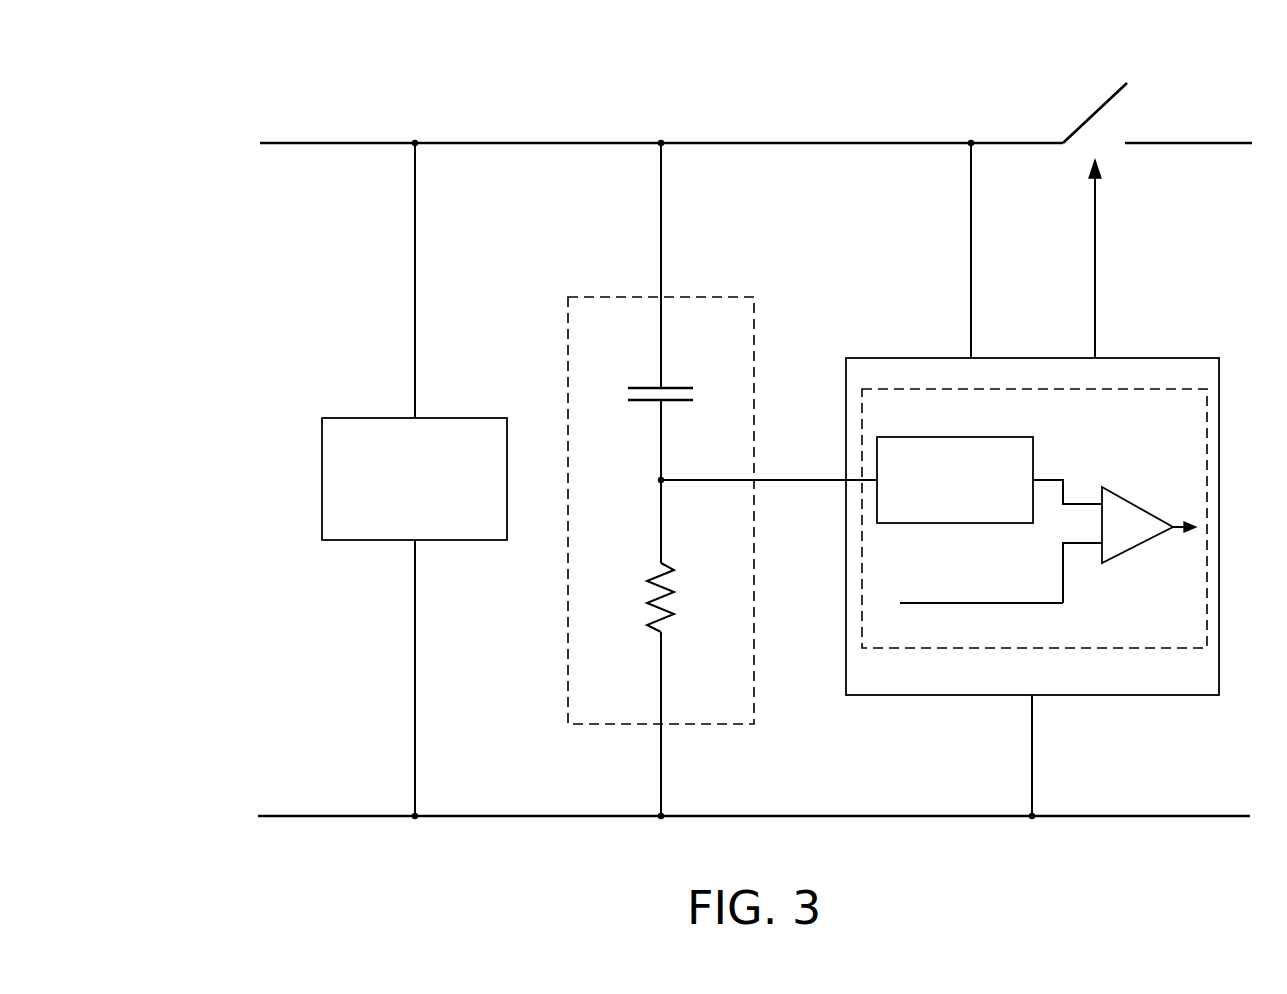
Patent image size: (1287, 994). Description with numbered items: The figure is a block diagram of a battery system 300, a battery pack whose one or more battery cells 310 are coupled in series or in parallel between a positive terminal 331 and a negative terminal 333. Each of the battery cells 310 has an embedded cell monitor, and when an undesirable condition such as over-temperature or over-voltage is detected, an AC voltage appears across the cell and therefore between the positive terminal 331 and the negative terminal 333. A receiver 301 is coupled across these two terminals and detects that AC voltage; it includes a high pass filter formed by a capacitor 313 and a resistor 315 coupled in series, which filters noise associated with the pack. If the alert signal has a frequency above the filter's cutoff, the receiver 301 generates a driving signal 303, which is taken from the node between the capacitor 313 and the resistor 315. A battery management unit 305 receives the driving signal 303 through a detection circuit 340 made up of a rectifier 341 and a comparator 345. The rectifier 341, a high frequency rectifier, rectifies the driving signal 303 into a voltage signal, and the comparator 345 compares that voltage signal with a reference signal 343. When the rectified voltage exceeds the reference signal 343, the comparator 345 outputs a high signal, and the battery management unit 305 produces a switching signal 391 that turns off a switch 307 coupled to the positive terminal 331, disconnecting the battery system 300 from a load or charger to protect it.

The battery system 300 is at (247, 113).
The positive terminal 331 is at (508, 141).
The negative terminal 333 is at (506, 820).
The switch 307 is at (1082, 126).
The switching signal 391 is at (1096, 255).
The battery cells 310 is at (445, 416).
The receiver 301 is at (664, 479).
The capacitor 313 is at (672, 387).
The resistor 315 is at (668, 588).
The driving signal 303 is at (768, 479).
The battery management unit 305 is at (1032, 479).
The detection circuit 340 is at (1034, 536).
The rectifier 341 is at (955, 436).
The reference signal 343 is at (963, 602).
The comparator 345 is at (1123, 500).